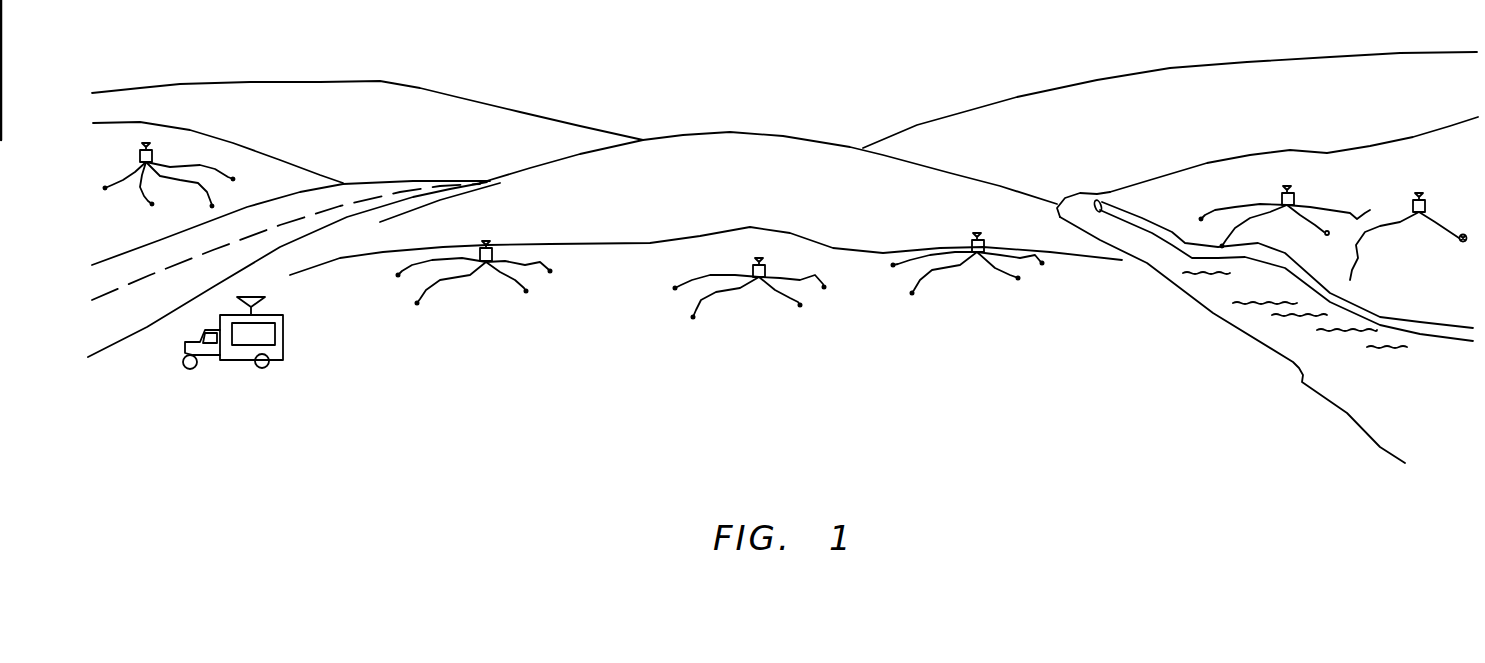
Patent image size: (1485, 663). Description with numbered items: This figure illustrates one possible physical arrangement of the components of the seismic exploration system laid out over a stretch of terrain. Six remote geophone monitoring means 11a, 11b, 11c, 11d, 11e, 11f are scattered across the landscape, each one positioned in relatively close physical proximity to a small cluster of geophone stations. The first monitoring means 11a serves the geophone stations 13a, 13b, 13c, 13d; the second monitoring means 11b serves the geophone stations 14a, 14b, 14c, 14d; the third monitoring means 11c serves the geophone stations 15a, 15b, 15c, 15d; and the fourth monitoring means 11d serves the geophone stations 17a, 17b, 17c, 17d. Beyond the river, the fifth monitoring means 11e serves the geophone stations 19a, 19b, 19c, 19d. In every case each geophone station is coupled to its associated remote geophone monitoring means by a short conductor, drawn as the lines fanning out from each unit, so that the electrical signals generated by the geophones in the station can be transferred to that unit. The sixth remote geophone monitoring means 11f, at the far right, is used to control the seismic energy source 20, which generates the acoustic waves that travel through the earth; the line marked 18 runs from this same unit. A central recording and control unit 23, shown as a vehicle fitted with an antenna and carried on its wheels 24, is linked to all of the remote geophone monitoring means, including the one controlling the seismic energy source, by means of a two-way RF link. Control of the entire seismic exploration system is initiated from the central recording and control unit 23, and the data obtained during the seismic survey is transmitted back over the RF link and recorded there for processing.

The remote geophone monitoring means 11a is at (166, 145).
The remote geophone monitoring means 11b is at (507, 237).
The remote geophone monitoring means 11c is at (783, 259).
The remote geophone monitoring means 11d is at (997, 231).
The remote geophone monitoring means 11e is at (1310, 186).
The remote geophone monitoring means 11f is at (1442, 195).
The geophone station 13a is at (124, 192).
The geophone station 13b is at (166, 194).
The geophone station 13c is at (202, 185).
The geophone station 13d is at (212, 173).
The geophone station 14a is at (426, 282).
The geophone station 14b is at (436, 299).
The geophone station 14c is at (507, 294).
The geophone station 14d is at (541, 282).
The geophone station 15a is at (698, 297).
The geophone station 15b is at (724, 314).
The geophone station 15c is at (801, 309).
The geophone station 15d is at (813, 298).
The geophone station 17a is at (917, 273).
The geophone station 17b is at (942, 288).
The geophone station 17c is at (1019, 287).
The geophone station 17d is at (1031, 273).
The geophone station 19a is at (1229, 199).
The geophone station 19b is at (1253, 226).
The geophone station 19c is at (1308, 228).
The geophone station 19d is at (1345, 208).
The sensor lead 18 is at (1384, 253).
The seismic energy source 20 is at (1437, 239).
The central recording and control unit 23 is at (248, 328).
The truck wheel 24 is at (226, 371).